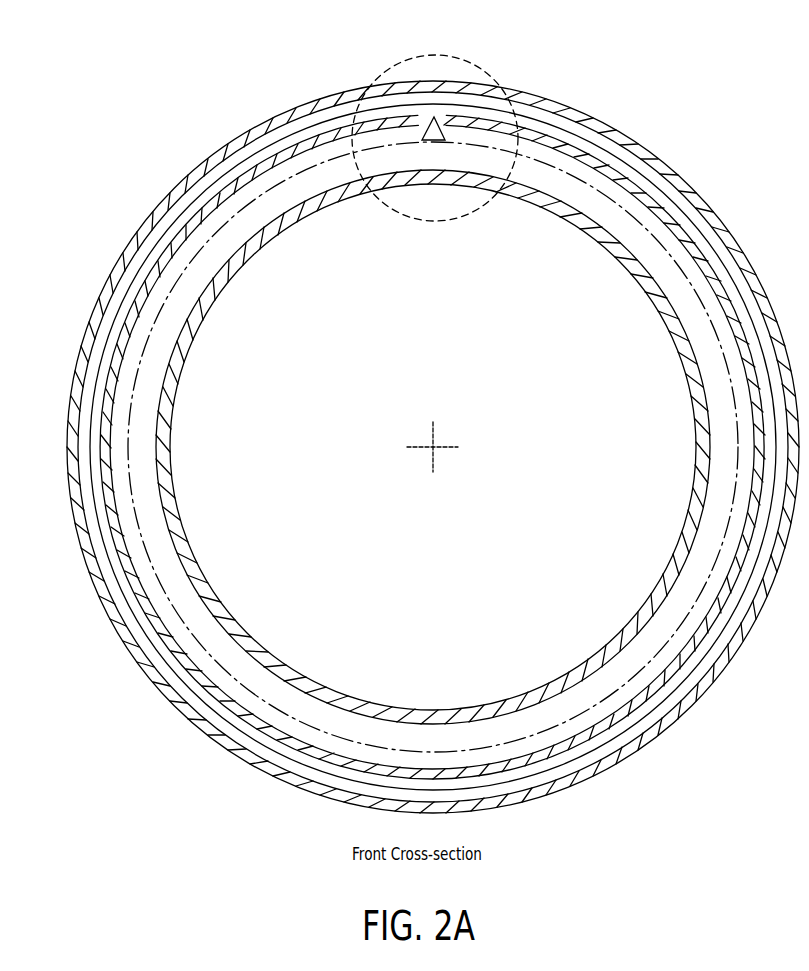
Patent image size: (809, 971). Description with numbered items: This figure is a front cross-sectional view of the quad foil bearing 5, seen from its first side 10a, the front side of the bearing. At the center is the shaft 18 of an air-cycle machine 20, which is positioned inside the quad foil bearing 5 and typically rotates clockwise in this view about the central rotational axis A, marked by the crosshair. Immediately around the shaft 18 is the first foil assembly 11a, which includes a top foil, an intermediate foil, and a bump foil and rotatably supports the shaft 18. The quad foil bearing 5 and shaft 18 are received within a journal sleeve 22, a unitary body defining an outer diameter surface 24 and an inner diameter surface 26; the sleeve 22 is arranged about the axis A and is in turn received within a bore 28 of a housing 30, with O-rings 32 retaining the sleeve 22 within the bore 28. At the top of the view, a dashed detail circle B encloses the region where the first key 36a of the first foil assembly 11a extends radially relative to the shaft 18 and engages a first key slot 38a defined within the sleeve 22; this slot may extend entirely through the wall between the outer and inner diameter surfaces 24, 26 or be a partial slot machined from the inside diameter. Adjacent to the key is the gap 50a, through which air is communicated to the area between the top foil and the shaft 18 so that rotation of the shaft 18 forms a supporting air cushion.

The quad foil bearing 5 is at (106, 108).
The first side 10a is at (268, 140).
The first foil assembly 11a is at (249, 210).
The shaft 18 is at (167, 445).
The air-cycle machine 20 is at (640, 602).
The journal sleeve 22 is at (117, 545).
The outer diameter surface 24 is at (102, 470).
The inner diameter surface 26 is at (137, 573).
The bore 28 is at (80, 392).
The housing 30 is at (108, 288).
The O-rings 32 is at (98, 337).
The first key 36a is at (445, 140).
The first key slot 38a is at (422, 140).
The gap 50a is at (433, 155).
The central rotational axis A is at (440, 441).
The detail region B is at (435, 227).